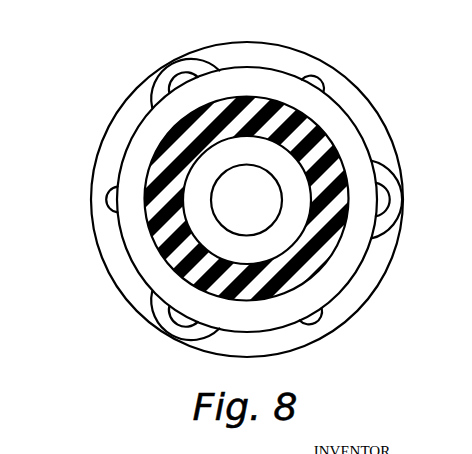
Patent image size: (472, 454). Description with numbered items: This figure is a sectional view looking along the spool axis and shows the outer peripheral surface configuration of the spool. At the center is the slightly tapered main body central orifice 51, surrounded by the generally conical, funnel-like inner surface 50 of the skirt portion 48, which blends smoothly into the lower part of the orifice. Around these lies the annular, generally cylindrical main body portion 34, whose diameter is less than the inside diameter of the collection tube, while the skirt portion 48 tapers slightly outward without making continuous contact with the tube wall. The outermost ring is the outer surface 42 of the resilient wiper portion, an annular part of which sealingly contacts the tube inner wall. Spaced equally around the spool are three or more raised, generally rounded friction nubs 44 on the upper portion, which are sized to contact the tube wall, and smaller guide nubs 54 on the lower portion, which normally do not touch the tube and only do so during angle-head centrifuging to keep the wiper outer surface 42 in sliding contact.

The outer surface of wiper portion 42 is at (277, 56).
The main body portion 34 is at (145, 130).
The skirt portion 48 is at (167, 248).
The inner surface of skirt portion 50 is at (243, 250).
The main body central orifice 51 is at (246, 163).
The friction nubs 44 is at (188, 60).
The guide nubs 54 is at (167, 72).